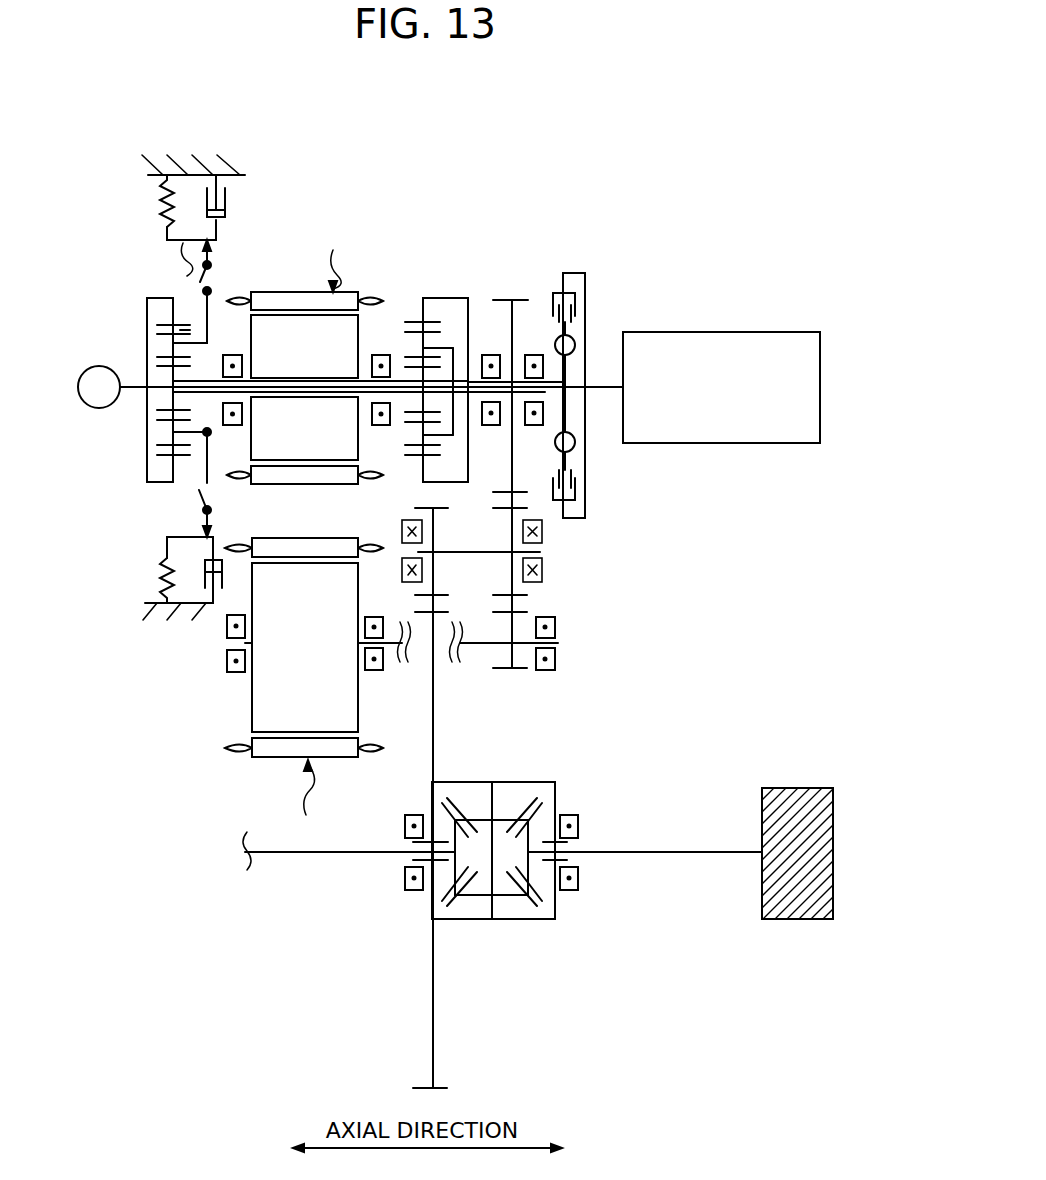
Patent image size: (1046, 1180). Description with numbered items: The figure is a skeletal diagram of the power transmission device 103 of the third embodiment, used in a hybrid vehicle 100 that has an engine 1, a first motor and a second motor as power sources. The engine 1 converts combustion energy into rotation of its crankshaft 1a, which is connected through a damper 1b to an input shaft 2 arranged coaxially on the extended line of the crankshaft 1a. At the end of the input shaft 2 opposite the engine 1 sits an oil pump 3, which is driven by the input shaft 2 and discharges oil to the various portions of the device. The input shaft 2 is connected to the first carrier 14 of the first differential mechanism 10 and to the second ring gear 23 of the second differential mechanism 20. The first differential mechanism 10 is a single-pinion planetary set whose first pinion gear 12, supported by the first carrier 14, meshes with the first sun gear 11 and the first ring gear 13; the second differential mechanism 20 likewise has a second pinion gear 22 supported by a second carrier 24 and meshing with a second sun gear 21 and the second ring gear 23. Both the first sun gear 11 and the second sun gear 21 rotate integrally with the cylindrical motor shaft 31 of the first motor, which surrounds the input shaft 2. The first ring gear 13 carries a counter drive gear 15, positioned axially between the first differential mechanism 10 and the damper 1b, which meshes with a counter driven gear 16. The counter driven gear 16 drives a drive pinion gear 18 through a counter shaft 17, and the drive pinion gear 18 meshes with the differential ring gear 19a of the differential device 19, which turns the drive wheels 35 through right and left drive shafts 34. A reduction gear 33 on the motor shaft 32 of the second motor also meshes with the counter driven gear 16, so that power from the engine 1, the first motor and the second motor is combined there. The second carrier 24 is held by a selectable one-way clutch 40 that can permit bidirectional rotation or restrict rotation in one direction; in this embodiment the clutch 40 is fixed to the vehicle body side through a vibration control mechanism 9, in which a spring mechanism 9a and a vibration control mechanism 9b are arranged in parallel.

The engine 1 is at (716, 332).
The crankshaft 1a is at (600, 386).
The damper 1b is at (577, 263).
The input shaft 2 is at (552, 378).
The oil pump 3 is at (99, 412).
The vibration control mechanism 9 is at (207, 168).
The spring mechanism 9a is at (177, 185).
The vibration control mechanism 9b is at (231, 197).
The first differential mechanism 10 is at (466, 345).
The first sun gear 11 is at (452, 390).
The first pinion gear 12 is at (419, 321).
The first ring gear 13 is at (427, 322).
The first carrier 14 is at (452, 356).
The counter drive gear 15 is at (517, 490).
The counter driven gear 16 is at (498, 503).
The counter shaft 17 is at (470, 553).
The drive pinion gear 18 is at (445, 599).
The differential device 19 is at (530, 758).
The differential ring gear 19a is at (425, 604).
The second differential mechanism 20 is at (156, 353).
The second sun gear 21 is at (182, 357).
The second pinion gear 22 is at (190, 329).
The second ring gear 23 is at (190, 332).
The second carrier 24 is at (193, 342).
The motor shaft 31 is at (366, 380).
The motor shaft 32 is at (474, 652).
The reduction gear 33 is at (520, 612).
The drive shaft 34 is at (695, 850).
The drive wheel 35 is at (800, 786).
The selectable one-way clutch 40 is at (220, 258).
The vehicle 100 is at (112, 192).
The power transmission device 103 is at (361, 183).